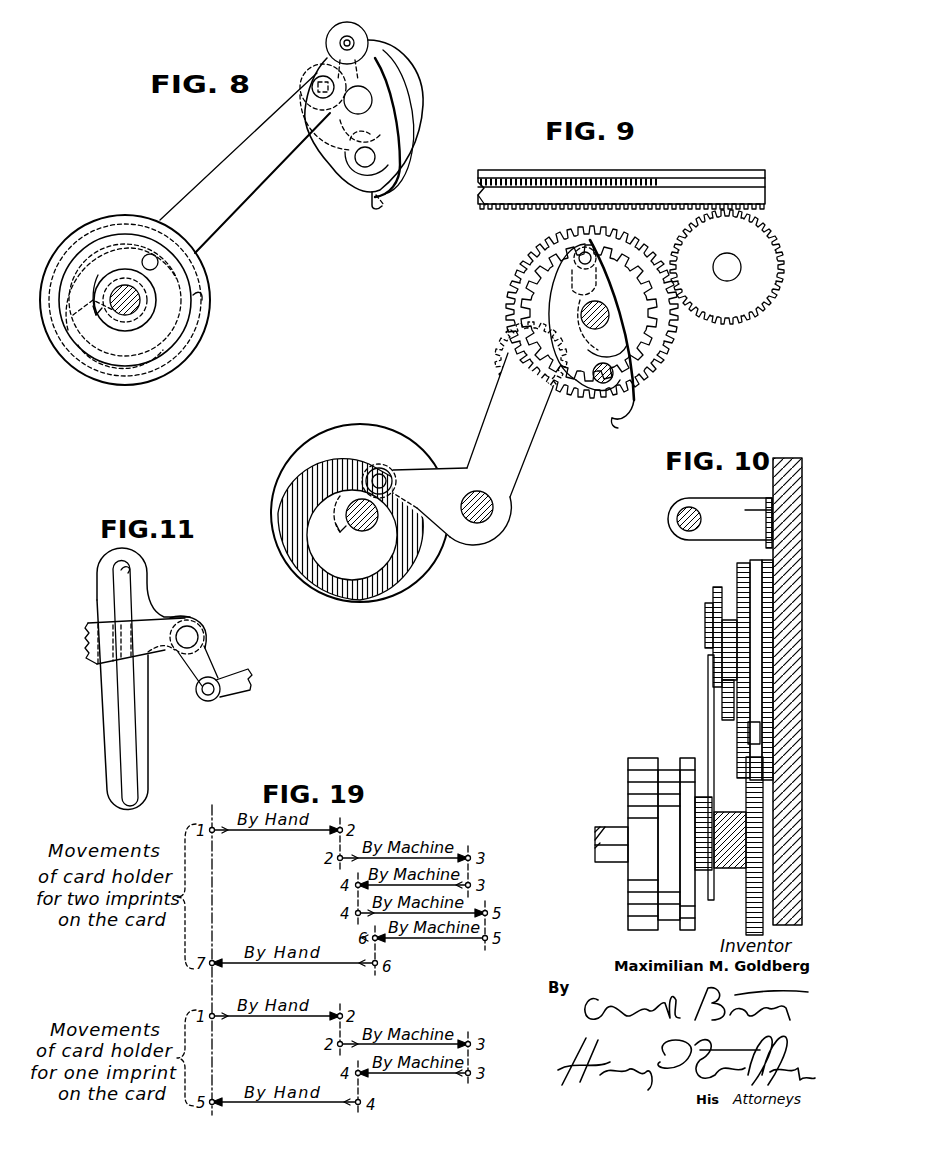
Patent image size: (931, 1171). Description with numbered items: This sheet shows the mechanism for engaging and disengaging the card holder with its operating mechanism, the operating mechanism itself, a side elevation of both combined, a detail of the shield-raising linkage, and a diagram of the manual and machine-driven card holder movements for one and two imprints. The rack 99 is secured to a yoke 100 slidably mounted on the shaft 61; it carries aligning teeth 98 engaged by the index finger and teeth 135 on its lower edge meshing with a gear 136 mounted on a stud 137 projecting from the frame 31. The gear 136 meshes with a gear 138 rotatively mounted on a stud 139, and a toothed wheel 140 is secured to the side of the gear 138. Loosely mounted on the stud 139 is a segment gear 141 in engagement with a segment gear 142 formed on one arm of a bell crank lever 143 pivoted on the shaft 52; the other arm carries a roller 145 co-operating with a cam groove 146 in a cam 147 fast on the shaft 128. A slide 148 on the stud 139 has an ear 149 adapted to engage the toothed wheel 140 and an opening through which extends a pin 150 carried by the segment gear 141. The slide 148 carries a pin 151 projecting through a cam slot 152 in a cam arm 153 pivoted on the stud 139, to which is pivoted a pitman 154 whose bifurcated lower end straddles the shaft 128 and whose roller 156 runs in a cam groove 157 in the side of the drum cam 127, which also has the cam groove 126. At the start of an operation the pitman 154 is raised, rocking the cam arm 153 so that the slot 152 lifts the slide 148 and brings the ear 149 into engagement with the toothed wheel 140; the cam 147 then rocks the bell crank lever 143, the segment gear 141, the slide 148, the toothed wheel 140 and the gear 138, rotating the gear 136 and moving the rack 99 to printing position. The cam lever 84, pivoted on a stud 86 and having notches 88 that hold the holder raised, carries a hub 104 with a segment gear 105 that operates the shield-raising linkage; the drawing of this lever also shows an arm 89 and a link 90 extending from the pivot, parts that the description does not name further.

In FIG. 10, the frame 31 is at (780, 456).
In FIG. 9, the shaft 52 is at (494, 500).
In FIG. 10, the shaft 52 is at (730, 868).
In FIG. 10, the shaft 61 is at (678, 530).
In FIG. 11, the cam lever 84 is at (142, 756).
In FIG. 11, the stud 86 is at (198, 633).
In FIG. 11, the notches 88 is at (131, 571).
In FIG. 11, the arm 89 is at (206, 670).
In FIG. 11, the link 90 is at (242, 692).
In FIG. 9, the aligning teeth 98 is at (540, 180).
In FIG. 9, the rack 99 is at (608, 177).
In FIG. 10, the rack 99 is at (767, 498).
In FIG. 10, the yoke 100 is at (718, 510).
In FIG. 11, the hub 104 is at (192, 619).
In FIG. 11, the segment gear 105 is at (96, 662).
In FIG. 10, the cam groove 126 is at (660, 928).
In FIG. 8, the drum cam 127 is at (160, 245).
In FIG. 10, the drum cam 127 is at (635, 882).
In FIG. 8, the shaft 128 is at (138, 312).
In FIG. 9, the shaft 128 is at (366, 532).
In FIG. 10, the shaft 128 is at (608, 845).
In FIG. 9, the teeth 135 is at (520, 214).
In FIG. 9, the gear 136 is at (738, 312).
In FIG. 9, the stud 137 is at (727, 255).
In FIG. 9, the gear 138 is at (655, 370).
In FIG. 8, the stud 139 is at (368, 96).
In FIG. 9, the stud 139 is at (593, 315).
In FIG. 10, the stud 139 is at (705, 640).
In FIG. 9, the toothed wheel 140 is at (650, 350).
In FIG. 9, the segment gear 141 is at (605, 306).
In FIG. 9, the segment gear 142 is at (512, 348).
In FIG. 9, the bell crank lever 143 is at (500, 518).
In FIG. 9, the roller 145 is at (388, 478).
In FIG. 9, the cam groove 146 is at (398, 585).
In FIG. 9, the cam 147 is at (446, 560).
In FIG. 10, the cam 147 is at (746, 913).
In FIG. 8, the slide 148 is at (392, 144).
In FIG. 9, the slide 148 is at (620, 350).
In FIG. 10, the slide 148 is at (752, 562).
In FIG. 8, the ear 149 is at (382, 205).
In FIG. 9, the ear 149 is at (616, 426).
In FIG. 10, the ear 149 is at (748, 735).
In FIG. 9, the pin 150 is at (578, 252).
In FIG. 8, the pin 151 is at (362, 165).
In FIG. 9, the pin 151 is at (598, 385).
In FIG. 10, the pin 151 is at (722, 702).
In FIG. 8, the cam slot 152 is at (400, 98).
In FIG. 8, the cam arm 153 is at (385, 56).
In FIG. 10, the cam arm 153 is at (715, 587).
In FIG. 8, the pitman 154 is at (245, 143).
In FIG. 10, the pitman 154 is at (708, 666).
In FIG. 8, the roller 156 is at (148, 258).
In FIG. 10, the roller 156 is at (688, 805).
In FIG. 8, the cam groove 157 is at (198, 292).